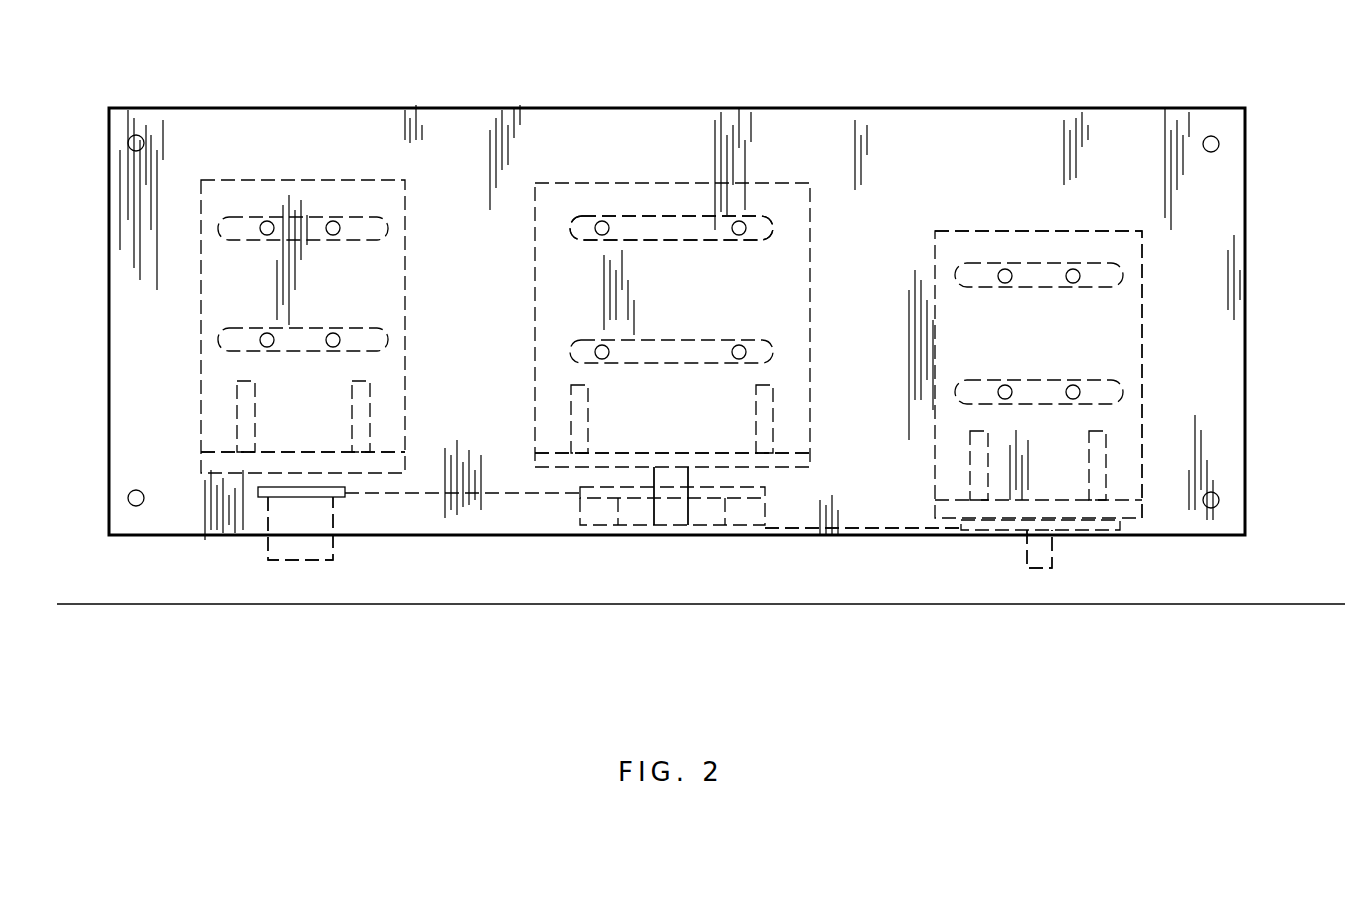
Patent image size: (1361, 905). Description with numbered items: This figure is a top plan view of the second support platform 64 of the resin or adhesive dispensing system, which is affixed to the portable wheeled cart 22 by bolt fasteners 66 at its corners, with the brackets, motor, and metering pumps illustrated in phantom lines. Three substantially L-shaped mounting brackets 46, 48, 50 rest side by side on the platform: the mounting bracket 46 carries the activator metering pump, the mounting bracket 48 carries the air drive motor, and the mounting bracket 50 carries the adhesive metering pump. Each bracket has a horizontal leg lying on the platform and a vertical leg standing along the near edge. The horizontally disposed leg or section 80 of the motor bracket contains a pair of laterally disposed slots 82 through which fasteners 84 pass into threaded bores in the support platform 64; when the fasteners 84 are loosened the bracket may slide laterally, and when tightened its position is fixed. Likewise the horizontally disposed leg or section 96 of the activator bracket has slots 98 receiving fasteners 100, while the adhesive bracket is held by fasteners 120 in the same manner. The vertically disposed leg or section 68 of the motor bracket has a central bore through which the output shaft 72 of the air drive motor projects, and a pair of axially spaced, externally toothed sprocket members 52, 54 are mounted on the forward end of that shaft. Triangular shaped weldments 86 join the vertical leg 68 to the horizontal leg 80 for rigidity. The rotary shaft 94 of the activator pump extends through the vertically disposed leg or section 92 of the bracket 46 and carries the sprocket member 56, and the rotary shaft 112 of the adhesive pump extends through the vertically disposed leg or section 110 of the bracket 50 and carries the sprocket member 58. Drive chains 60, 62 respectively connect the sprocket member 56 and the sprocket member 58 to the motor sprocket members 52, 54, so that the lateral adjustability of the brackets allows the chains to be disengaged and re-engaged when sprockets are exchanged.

The portable wheeled cart 22 is at (1345, 530).
The mounting bracket 46 is at (383, 277).
The mounting bracket 48 is at (798, 280).
The mounting bracket 50 is at (1115, 315).
The sprocket member 52 is at (765, 494).
The sprocket member 54 is at (765, 530).
The sprocket member 56 is at (258, 490).
The sprocket member 58 is at (1120, 530).
The drive chain 60 is at (468, 494).
The drive chain 62 is at (912, 530).
The second support platform 64 is at (1215, 372).
The bolt fasteners 66 is at (130, 136).
The vertically disposed leg or section 68 is at (630, 460).
The output shaft 72 is at (660, 505).
The horizontally disposed leg or section 80 is at (687, 299).
The slots 82 is at (676, 216).
The fasteners 84 is at (597, 219).
The triangular shaped weldments 86 is at (580, 415).
The vertically disposed leg or section 92 is at (397, 460).
The rotary shaft 94 is at (325, 517).
The horizontally disposed leg or section 96 is at (323, 412).
The slots 98 is at (385, 222).
The fasteners 100 is at (265, 222).
The vertically disposed leg or section 110 is at (1138, 518).
The rotary shaft 112 is at (1052, 418).
The fasteners 120 is at (1000, 270).